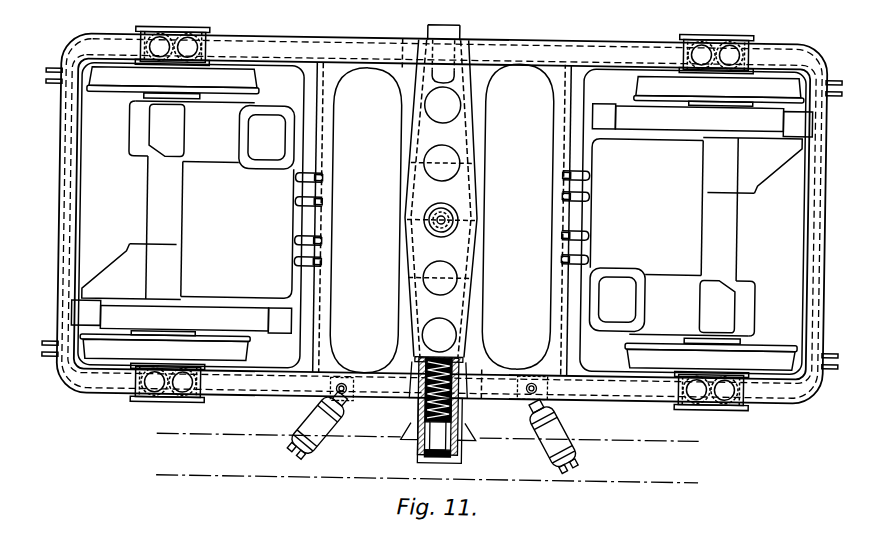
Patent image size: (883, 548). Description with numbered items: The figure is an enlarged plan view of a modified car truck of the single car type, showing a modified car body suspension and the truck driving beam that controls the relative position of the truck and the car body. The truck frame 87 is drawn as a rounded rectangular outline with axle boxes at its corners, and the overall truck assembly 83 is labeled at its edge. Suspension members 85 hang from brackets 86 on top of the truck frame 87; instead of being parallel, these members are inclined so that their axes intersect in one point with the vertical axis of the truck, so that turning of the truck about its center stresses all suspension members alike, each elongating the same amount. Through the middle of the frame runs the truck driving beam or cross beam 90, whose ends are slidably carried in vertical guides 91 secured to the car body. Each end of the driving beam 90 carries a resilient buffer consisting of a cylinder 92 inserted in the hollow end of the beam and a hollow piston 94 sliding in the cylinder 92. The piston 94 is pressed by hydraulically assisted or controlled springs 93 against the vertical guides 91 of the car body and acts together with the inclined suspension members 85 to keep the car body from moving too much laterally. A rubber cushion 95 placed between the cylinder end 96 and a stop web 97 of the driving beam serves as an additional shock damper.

The truck frame assembly 83 is at (31, 403).
The suspension members 85 is at (551, 446).
The brackets 86 is at (516, 386).
The truck frame 87 is at (785, 399).
The truck driving beam 90 is at (465, 298).
The vertical guides 91 is at (406, 429).
The cylinder 92 is at (426, 444).
The springs 93 is at (421, 411).
The hollow piston 94 is at (456, 458).
The rubber cushion 95 is at (452, 361).
The cylinder end 96 is at (455, 372).
The stop web 97 is at (449, 356).